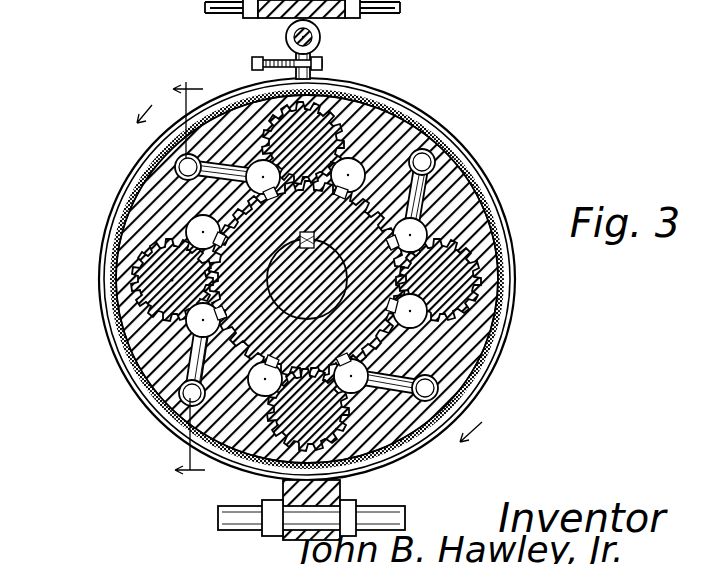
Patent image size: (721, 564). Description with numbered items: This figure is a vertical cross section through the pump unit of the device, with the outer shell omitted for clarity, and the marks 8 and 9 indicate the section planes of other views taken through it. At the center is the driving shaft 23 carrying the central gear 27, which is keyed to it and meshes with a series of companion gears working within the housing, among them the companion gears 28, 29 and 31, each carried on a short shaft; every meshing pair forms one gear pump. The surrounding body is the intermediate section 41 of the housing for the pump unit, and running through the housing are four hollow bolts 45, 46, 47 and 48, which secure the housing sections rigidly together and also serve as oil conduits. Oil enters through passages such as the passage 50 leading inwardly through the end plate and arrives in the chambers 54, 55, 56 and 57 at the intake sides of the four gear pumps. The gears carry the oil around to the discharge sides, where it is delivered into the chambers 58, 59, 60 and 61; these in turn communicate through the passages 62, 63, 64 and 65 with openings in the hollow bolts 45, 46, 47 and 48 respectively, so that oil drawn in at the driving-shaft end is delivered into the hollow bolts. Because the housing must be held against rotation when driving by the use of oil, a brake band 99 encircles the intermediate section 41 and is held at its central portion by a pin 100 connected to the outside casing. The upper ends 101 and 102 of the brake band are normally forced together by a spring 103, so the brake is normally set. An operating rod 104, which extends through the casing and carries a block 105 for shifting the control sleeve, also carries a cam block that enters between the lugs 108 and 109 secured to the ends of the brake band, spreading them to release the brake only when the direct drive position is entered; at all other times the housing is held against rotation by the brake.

The section line 8- 8 is at (304, 275).
The section line 9- 9 is at (189, 281).
The driving shaft 23 is at (418, 340).
The central gear 27 is at (453, 170).
The companion gear 28 is at (482, 265).
The companion gear 29 is at (380, 462).
The companion gear 31 is at (428, 114).
The intermediate section 41 is at (112, 245).
The hollow bolt 45 is at (470, 150).
The hollow bolt 46 is at (440, 398).
The hollow bolt 47 is at (150, 412).
The hollow bolt 48 is at (175, 165).
The passage 50 is at (104, 322).
The chamber 54 is at (428, 320).
The chamber 55 is at (200, 448).
The chamber 56 is at (132, 232).
The chamber 57 is at (455, 133).
The chamber 58 is at (488, 200).
The chamber 59 is at (430, 446).
The chamber 60 is at (115, 350).
The chamber 61 is at (186, 155).
The passage 62 is at (475, 168).
The passage 63 is at (455, 390).
The passage 64 is at (130, 375).
The passage 65 is at (125, 198).
The brake band 99 is at (104, 292).
The pin 100 is at (220, 518).
The upper end of brake band 101 is at (230, 88).
The upper end of brake band 102 is at (398, 98).
The spring 103 is at (266, 60).
The operating rod 104 is at (322, 58).
The block 105 is at (405, 9).
The lug 108 is at (288, 35).
The lug 109 is at (320, 35).